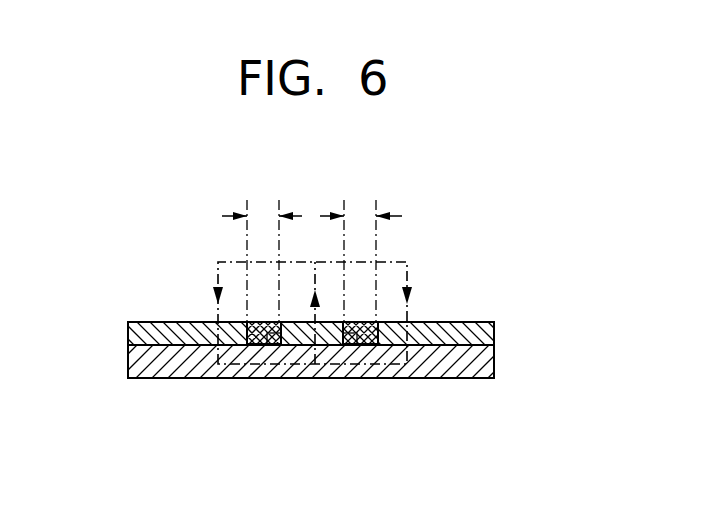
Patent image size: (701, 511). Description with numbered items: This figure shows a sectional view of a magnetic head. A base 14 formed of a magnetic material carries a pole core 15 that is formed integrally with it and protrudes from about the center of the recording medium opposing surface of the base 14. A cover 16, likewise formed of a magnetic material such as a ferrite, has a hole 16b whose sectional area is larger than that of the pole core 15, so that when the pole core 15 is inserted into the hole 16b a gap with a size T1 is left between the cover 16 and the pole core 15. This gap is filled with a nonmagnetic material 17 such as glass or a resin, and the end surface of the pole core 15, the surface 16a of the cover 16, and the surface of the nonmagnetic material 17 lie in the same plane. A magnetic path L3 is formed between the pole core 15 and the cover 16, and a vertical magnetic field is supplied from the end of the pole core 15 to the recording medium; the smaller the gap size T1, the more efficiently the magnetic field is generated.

The base 14 is at (472, 363).
The pole core 15 is at (333, 335).
The cover 16 is at (152, 322).
The surface of the cover 16a is at (188, 322).
The hole 16b is at (277, 335).
The nonmagnetic material 17 is at (265, 338).
The magnetic path L3 is at (400, 262).
The gap size T1 is at (312, 250).